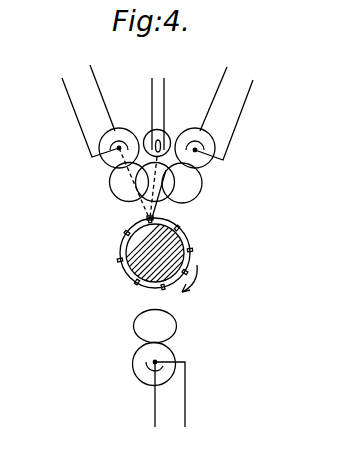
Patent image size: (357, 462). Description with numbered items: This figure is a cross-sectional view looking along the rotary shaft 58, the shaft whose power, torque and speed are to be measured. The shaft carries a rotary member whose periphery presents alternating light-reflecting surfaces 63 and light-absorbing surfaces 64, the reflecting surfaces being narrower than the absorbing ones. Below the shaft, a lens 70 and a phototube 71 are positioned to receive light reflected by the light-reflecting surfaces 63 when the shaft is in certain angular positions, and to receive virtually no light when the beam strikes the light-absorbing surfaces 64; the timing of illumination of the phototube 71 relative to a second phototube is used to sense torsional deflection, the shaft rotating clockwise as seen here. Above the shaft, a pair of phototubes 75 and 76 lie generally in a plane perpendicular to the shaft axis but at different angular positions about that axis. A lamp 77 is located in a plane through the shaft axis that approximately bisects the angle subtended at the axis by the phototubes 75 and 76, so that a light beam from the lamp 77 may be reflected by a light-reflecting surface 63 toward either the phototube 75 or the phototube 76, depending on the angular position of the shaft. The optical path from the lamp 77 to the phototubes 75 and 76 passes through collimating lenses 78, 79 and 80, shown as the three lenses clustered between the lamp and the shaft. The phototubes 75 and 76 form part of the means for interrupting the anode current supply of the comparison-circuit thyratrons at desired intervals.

The rotary shaft 58 is at (146, 246).
The light-reflecting surfaces 63 is at (178, 228).
The light-absorbing surfaces 64 is at (138, 286).
The lens 70 is at (165, 323).
The phototube 71 is at (137, 377).
The phototube 75 is at (132, 129).
The phototube 76 is at (212, 166).
The lamp 77 is at (168, 131).
The collimating lens 78 is at (167, 198).
The collimating lens 79 is at (120, 180).
The collimating lens 80 is at (197, 192).